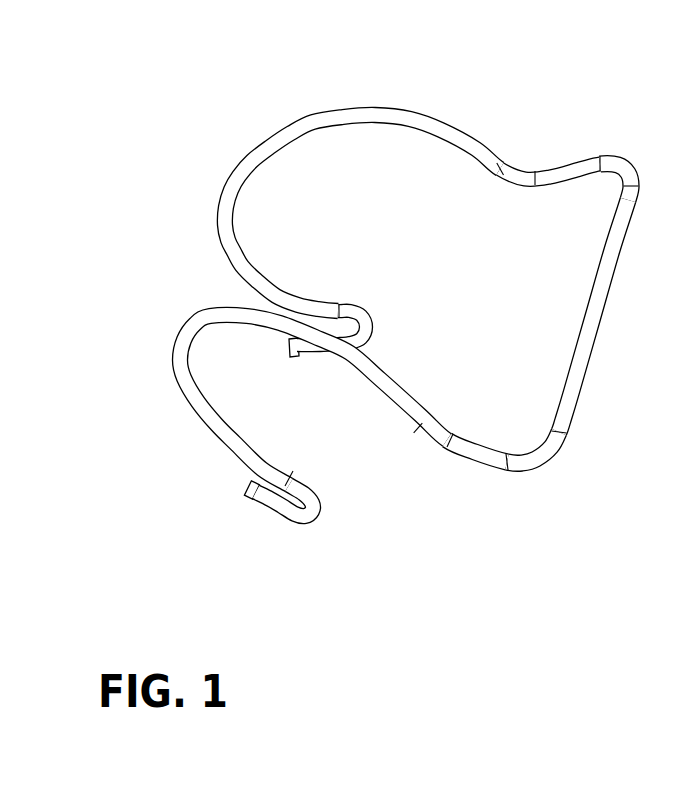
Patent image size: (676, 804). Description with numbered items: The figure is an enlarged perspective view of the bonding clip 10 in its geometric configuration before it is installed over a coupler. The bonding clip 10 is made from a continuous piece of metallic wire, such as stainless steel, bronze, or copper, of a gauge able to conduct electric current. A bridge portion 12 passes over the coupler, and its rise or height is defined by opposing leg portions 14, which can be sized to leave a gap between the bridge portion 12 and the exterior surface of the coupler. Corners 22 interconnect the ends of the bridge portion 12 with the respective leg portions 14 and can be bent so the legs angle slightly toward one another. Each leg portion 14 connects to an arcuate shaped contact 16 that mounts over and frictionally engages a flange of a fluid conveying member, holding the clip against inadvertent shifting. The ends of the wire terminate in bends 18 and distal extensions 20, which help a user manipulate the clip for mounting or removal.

The bonding clip 10 is at (196, 128).
The bridge portion 12 is at (603, 280).
The leg portions 14 is at (541, 178).
The arcuate shaped contacts 16 is at (318, 122).
The bends 18 is at (363, 328).
The distal extensions 20 is at (303, 342).
The corners 22 is at (624, 168).